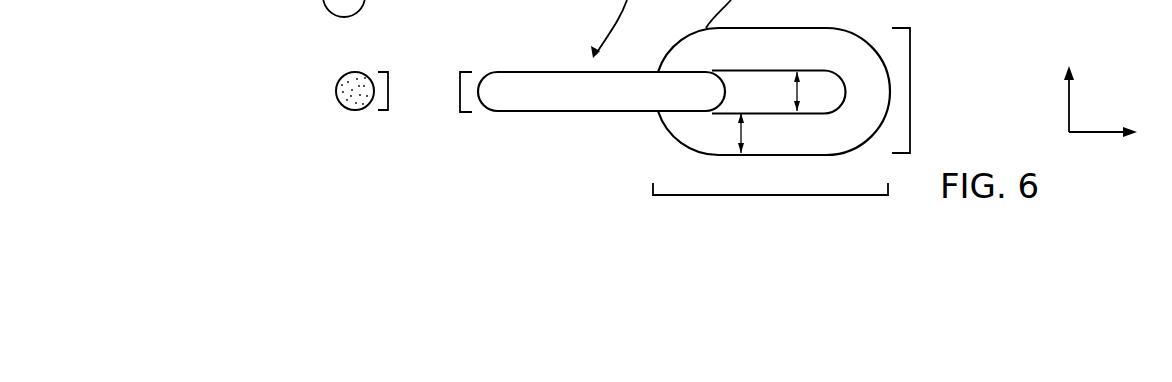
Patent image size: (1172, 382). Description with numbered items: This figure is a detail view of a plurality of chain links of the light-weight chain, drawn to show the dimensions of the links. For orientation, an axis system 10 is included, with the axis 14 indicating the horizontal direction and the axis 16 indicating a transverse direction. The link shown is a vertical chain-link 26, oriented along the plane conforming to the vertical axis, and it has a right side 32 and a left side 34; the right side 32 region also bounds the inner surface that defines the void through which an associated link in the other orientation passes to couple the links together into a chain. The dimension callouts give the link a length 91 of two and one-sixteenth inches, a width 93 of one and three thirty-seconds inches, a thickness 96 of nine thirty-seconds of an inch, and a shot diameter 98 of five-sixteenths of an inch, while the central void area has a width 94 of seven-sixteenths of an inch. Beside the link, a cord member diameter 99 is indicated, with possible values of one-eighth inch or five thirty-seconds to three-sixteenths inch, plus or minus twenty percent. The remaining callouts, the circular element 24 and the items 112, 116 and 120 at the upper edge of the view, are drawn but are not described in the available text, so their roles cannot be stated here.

The axis system 10 is at (1089, 105).
The horizontal direction axis 14 is at (1115, 134).
The transverse direction axis 16 is at (1067, 90).
The stop ball 24 is at (358, 72).
The vertical chain-link 26 is at (518, 72).
The right side 32 is at (629, 72).
The left side 34 is at (617, 111).
The length 91 is at (765, 196).
The width 93 is at (910, 88).
The central void width 94 is at (807, 91).
The thickness 96 is at (460, 92).
The shot diameter 98 is at (752, 133).
The cord member diameter 99 is at (388, 90).
The coupling member 112 is at (447, 0).
The ring 116 is at (367, 0).
The connector 120 is at (399, 0).